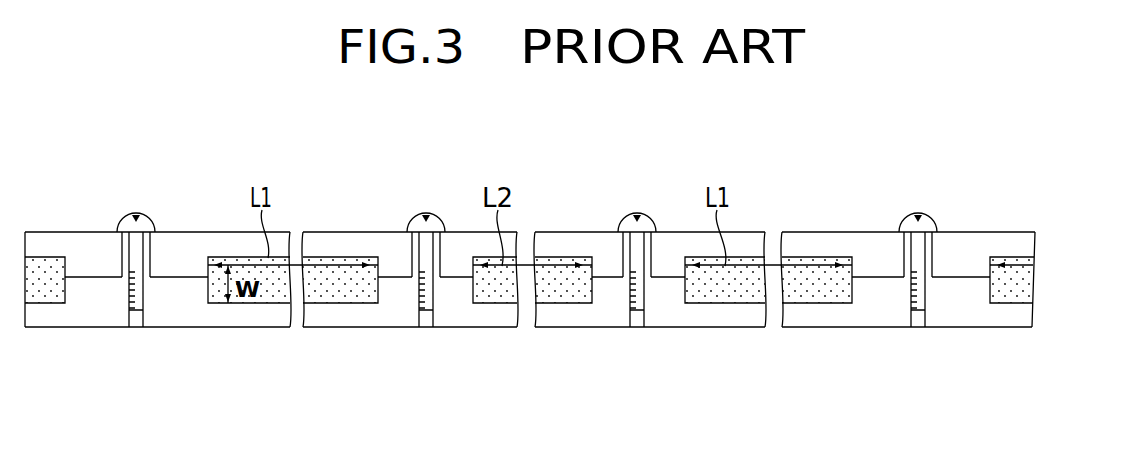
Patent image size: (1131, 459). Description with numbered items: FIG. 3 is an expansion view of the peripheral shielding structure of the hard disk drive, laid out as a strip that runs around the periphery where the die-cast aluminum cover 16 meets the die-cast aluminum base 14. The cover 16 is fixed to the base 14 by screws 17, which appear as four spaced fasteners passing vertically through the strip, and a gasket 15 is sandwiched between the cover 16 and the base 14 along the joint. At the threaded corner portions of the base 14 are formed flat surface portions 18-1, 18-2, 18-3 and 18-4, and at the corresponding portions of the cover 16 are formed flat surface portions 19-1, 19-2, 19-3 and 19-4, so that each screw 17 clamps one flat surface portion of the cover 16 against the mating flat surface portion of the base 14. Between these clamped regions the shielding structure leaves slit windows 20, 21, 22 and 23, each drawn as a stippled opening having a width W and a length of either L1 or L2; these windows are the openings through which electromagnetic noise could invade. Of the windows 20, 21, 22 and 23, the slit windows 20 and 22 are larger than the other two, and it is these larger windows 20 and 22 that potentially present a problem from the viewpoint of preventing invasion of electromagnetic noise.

The base 14 is at (1038, 335).
The gasket 15 is at (368, 297).
The cover 16 is at (1017, 232).
The screw 17 is at (152, 215).
The flat surface portion 18-1 is at (100, 292).
The flat surface portion 18-2 is at (398, 292).
The flat surface portion 18-3 is at (615, 292).
The flat surface portion 18-4 is at (867, 292).
The flat surface portion 19-1 is at (80, 262).
The flat surface portion 19-2 is at (388, 268).
The flat surface portion 19-3 is at (605, 268).
The flat surface portion 19-4 is at (872, 262).
The slit window 20 is at (328, 297).
The slit window 21 is at (565, 297).
The slit window 22 is at (742, 297).
The window 23 is at (40, 295).